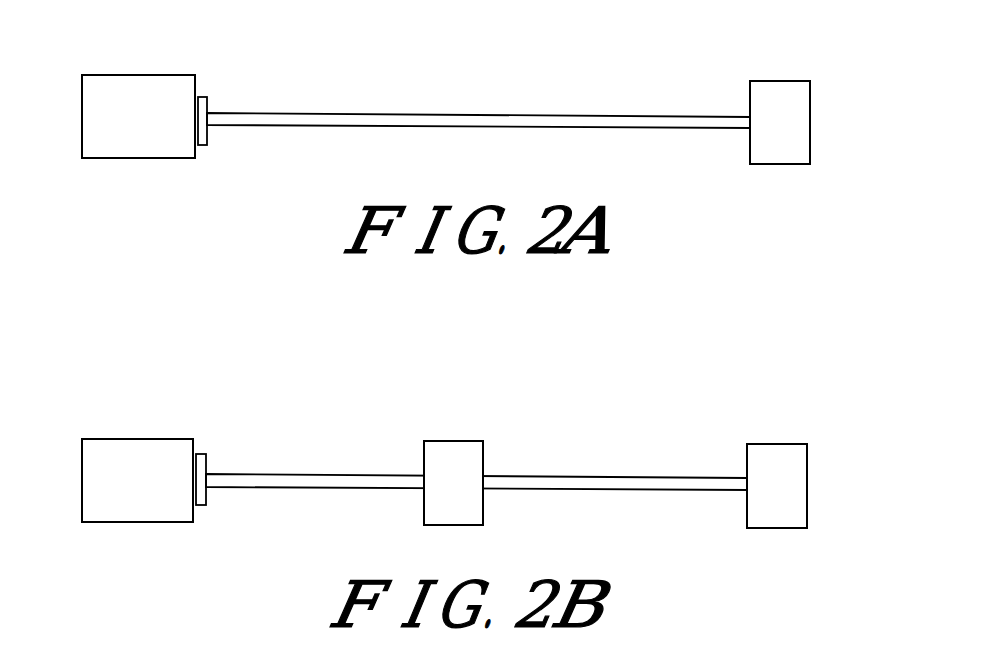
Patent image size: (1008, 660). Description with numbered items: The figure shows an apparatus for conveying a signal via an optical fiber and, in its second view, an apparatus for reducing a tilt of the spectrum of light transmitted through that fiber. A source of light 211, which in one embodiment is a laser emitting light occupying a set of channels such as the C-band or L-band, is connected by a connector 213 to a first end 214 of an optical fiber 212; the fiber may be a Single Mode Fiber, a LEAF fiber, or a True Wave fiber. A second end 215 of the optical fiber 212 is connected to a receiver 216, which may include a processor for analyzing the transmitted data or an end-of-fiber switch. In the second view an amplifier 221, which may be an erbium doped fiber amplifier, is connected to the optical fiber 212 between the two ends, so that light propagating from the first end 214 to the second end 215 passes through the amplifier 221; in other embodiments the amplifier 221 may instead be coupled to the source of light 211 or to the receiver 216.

In FIG. 2A, the source of light 211 is at (127, 75).
In FIG. 2B, the source of light 211 is at (123, 439).
In FIG. 2A, the optical fiber 212 is at (468, 113).
In FIG. 2B, the optical fiber 212 is at (560, 477).
In FIG. 2A, the connector 213 is at (210, 125).
In FIG. 2B, the connector 213 is at (208, 487).
In FIG. 2A, the first end 214 is at (207, 97).
In FIG. 2B, the first end 214 is at (206, 454).
In FIG. 2A, the second end 215 is at (745, 128).
In FIG. 2B, the second end 215 is at (742, 490).
In FIG. 2A, the receiver 216 is at (792, 81).
In FIG. 2B, the receiver 216 is at (778, 444).
In FIG. 2B, the amplifier 221 is at (448, 441).